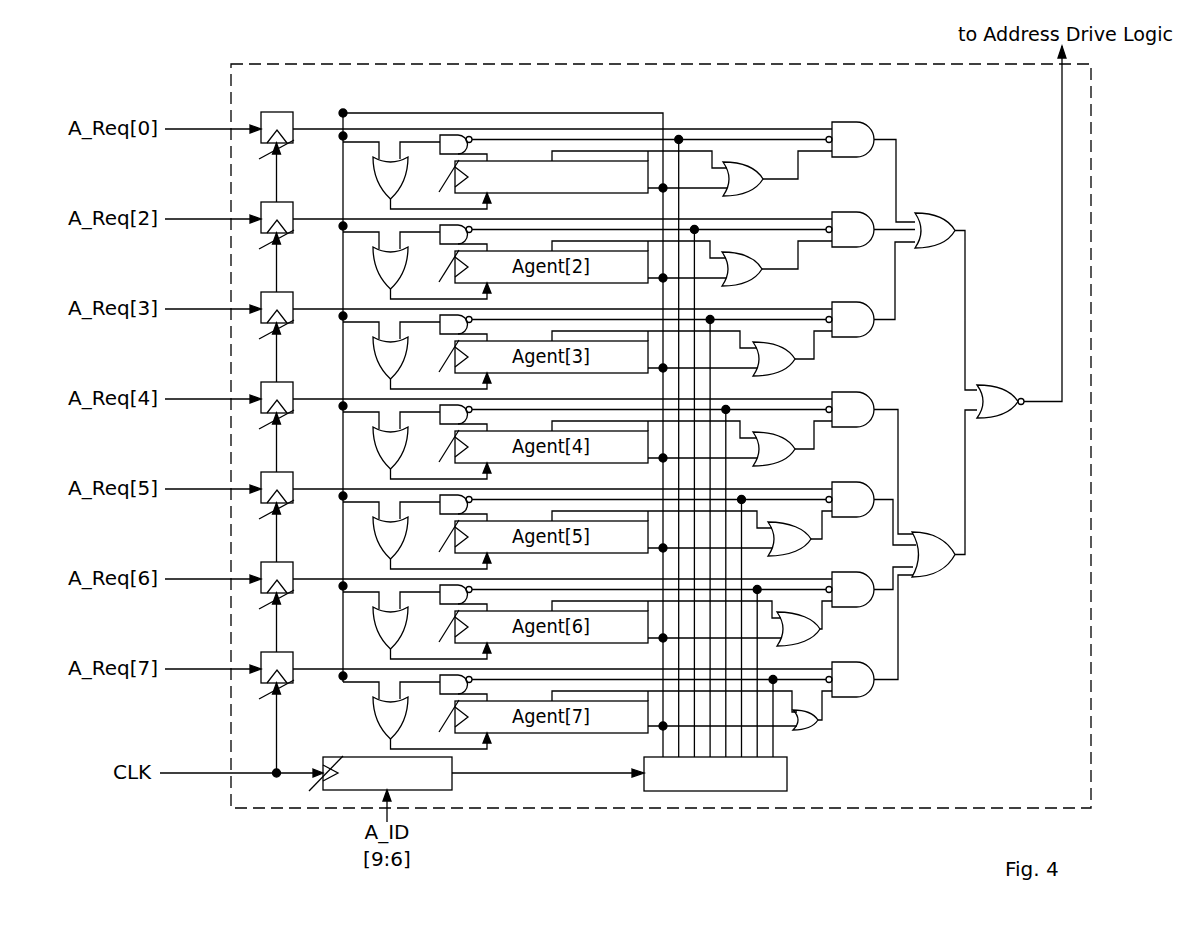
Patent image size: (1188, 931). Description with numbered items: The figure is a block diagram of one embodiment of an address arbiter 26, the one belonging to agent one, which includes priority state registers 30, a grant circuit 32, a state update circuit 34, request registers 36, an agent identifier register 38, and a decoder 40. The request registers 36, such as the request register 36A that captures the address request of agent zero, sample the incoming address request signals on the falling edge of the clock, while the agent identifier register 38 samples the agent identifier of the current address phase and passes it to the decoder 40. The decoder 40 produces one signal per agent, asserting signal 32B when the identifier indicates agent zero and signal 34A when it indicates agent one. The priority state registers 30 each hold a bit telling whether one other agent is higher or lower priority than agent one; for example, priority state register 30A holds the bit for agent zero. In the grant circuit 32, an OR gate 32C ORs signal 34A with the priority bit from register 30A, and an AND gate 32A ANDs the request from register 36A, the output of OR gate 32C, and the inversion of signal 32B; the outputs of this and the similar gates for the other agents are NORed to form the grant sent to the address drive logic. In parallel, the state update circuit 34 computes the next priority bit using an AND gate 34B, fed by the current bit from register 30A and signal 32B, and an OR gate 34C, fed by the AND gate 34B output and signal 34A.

The address arbiter 26 is at (1057, 803).
The priority state registers 30 is at (583, 142).
The priority state register 30A is at (558, 196).
The grant circuit 32 is at (999, 658).
The AND gate 32A is at (857, 128).
The signal 32B is at (713, 148).
The OR gate 32C is at (747, 182).
The state update circuit 34 is at (559, 139).
The signal 34A is at (617, 112).
The AND gate 34B is at (458, 140).
The OR gate 34C is at (388, 180).
The request registers 36 is at (282, 95).
The request register 36A is at (262, 147).
The agent identifier register 38 is at (370, 763).
The decoder 40 is at (788, 772).